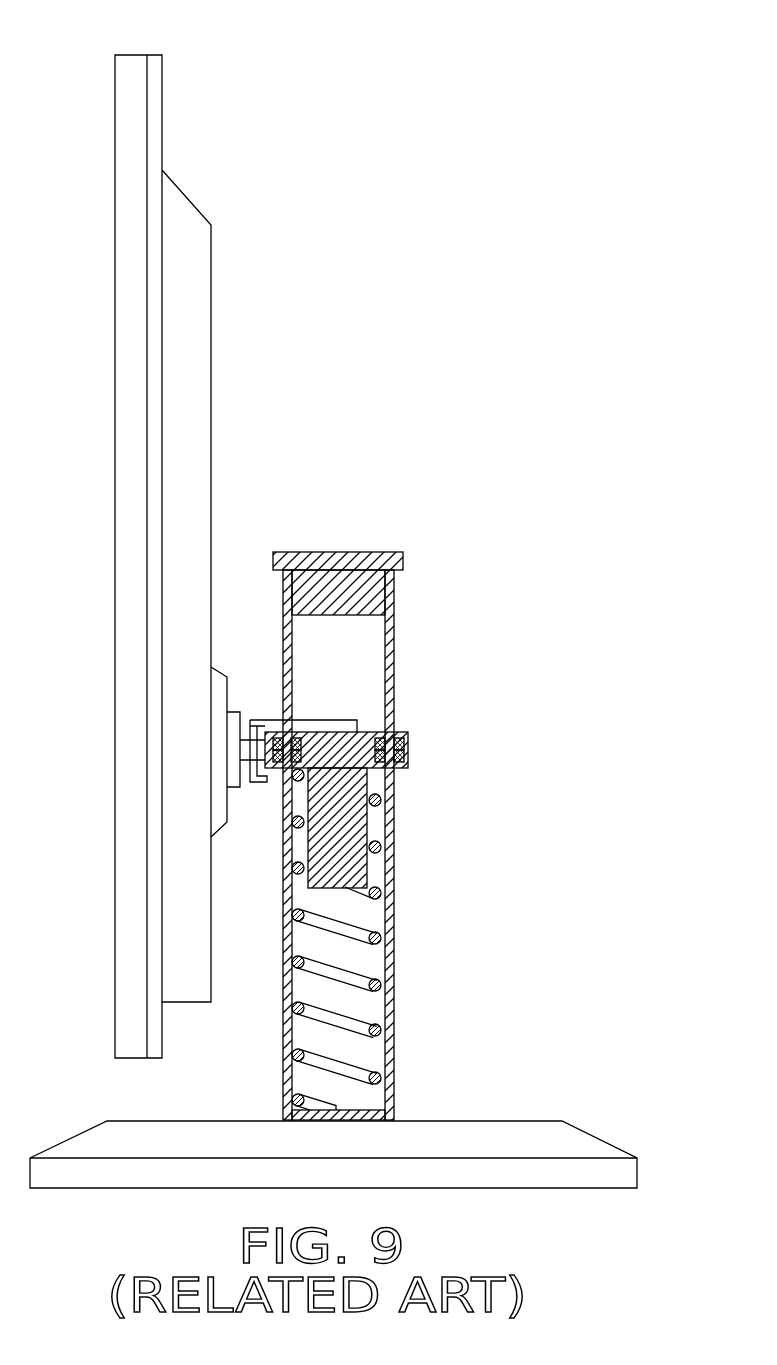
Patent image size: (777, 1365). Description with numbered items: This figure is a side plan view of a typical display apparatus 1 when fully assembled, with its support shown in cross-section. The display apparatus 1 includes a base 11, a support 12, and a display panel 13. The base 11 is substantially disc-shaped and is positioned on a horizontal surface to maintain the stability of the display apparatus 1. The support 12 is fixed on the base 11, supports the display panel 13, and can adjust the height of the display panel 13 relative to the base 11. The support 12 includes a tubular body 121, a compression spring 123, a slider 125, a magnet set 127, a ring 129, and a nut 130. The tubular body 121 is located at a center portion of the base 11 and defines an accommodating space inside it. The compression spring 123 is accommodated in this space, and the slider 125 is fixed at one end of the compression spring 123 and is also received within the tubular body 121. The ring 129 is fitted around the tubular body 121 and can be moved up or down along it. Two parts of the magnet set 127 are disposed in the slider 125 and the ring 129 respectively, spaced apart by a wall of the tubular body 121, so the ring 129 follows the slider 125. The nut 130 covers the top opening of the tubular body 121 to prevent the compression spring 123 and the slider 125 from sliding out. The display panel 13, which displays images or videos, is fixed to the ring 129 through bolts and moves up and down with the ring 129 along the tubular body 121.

The display apparatus 1 is at (257, 30).
The base 11 is at (582, 1142).
The support 12 is at (420, 651).
The display panel 13 is at (191, 337).
The tubular body 121 is at (388, 1010).
The compression spring 123 is at (383, 941).
The slider 125 is at (345, 770).
The magnet set 127 is at (397, 774).
The ring 129 is at (408, 743).
The nut 130 is at (370, 570).